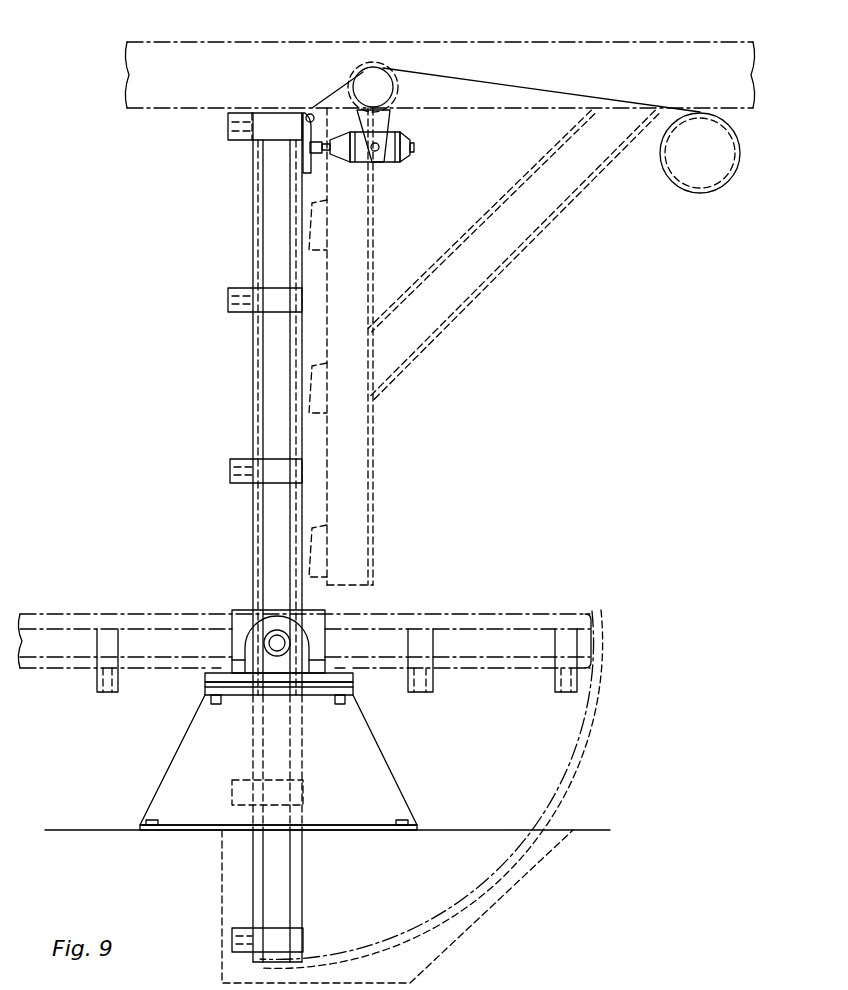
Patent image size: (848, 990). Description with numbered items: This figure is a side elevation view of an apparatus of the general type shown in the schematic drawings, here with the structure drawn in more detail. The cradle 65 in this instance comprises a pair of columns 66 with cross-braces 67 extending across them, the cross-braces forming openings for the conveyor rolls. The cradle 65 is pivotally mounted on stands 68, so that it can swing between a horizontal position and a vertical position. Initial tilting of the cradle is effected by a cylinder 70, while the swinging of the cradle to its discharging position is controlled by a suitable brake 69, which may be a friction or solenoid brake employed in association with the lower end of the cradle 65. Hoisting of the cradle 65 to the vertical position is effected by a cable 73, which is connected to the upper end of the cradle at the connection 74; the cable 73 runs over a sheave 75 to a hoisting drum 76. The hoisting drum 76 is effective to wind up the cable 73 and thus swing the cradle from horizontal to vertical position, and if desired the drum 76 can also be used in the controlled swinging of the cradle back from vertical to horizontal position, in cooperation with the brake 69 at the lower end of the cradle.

The cradle 65 is at (245, 393).
The columns 66 is at (253, 536).
The cross-braces 67 is at (228, 292).
The stands 68 is at (370, 760).
The brake 69 is at (582, 771).
The cylinder 70 is at (388, 161).
The cable 73 is at (481, 83).
The cable connection at upper end of cradle 74 is at (307, 112).
The sheave 75 is at (378, 64).
The hoisting drum 76 is at (680, 192).